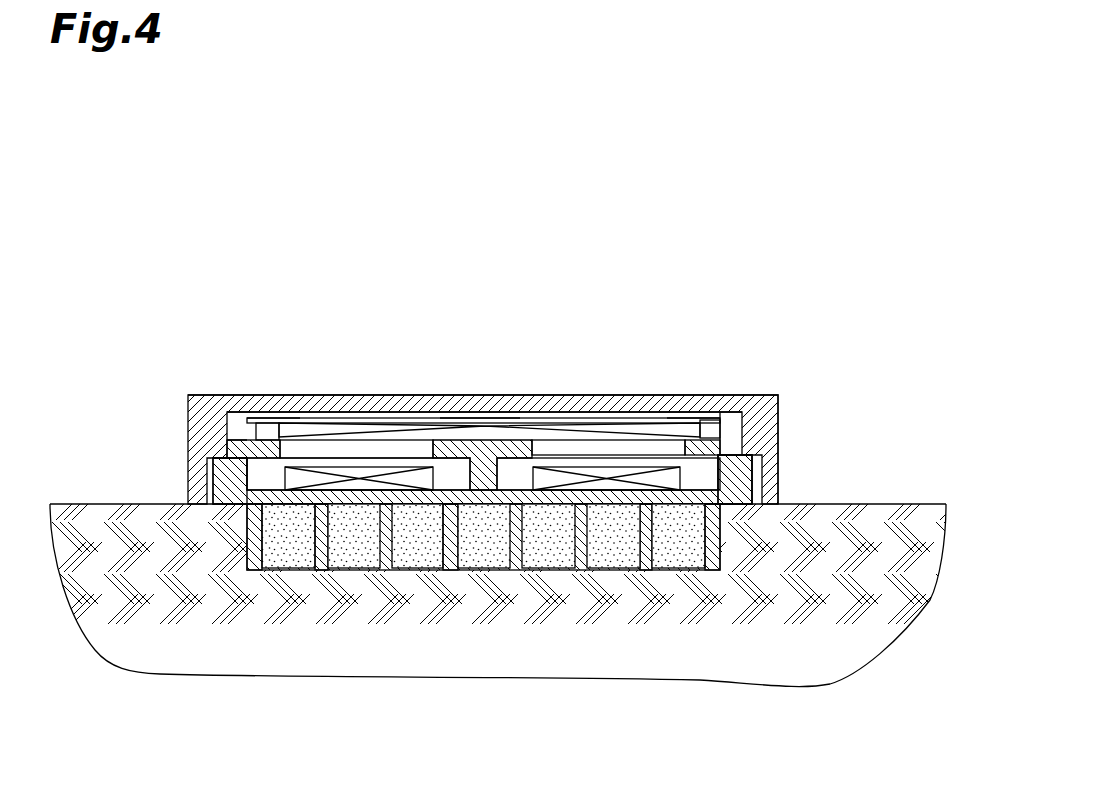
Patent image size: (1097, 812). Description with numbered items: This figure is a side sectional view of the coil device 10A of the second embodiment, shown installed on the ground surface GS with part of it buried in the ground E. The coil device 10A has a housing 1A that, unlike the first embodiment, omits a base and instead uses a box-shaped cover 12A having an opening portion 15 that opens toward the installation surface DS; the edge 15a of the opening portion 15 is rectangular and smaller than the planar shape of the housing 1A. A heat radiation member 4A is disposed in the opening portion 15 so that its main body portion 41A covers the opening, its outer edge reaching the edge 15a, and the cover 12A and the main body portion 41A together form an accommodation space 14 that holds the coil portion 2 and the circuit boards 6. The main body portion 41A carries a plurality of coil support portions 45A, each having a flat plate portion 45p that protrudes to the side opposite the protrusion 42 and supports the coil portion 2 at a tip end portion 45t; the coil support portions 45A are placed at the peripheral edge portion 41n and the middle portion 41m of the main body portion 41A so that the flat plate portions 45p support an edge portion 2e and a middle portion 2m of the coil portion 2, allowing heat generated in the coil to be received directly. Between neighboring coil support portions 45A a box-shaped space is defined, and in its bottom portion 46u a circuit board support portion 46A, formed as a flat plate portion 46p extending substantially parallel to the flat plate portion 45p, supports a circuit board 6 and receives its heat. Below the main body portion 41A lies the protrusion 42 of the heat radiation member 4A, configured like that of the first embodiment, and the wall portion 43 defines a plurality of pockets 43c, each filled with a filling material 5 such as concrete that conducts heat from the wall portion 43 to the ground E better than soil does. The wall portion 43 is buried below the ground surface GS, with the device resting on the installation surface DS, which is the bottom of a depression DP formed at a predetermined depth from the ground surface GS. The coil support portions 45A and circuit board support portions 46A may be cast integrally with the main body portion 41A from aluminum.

The coil device 10A is at (832, 168).
The box-shaped cover 12A is at (753, 394).
The housing 1A is at (514, 409).
The accommodation space 14 is at (238, 432).
The flat plate portion 45p is at (252, 437).
The edge portion 2e is at (287, 412).
The middle portion 2m is at (460, 412).
The coil support portion 45A is at (270, 425).
The coil portion 2 is at (305, 432).
The circuit board 6 is at (375, 470).
The bottom portion 46u is at (452, 483).
The tip end portion 45t is at (224, 439).
The ground surface GS is at (68, 503).
The flat plate portion 46p is at (265, 480).
The heat radiation member 4A is at (760, 470).
The pockets 43c is at (593, 540).
The ground E is at (113, 645).
The edge 15a is at (498, 592).
The opening portion 15 is at (498, 605).
The peripheral edge portion 41n is at (228, 514).
The depression DP is at (262, 540).
The circuit board support portion 46A is at (345, 515).
The installation surface DS is at (425, 560).
The middle portion 41m is at (471, 510).
The filling material 5 is at (557, 515).
The wall portion 43 is at (482, 599).
The protrusion 42 is at (482, 612).
The main body portion 41A is at (747, 514).